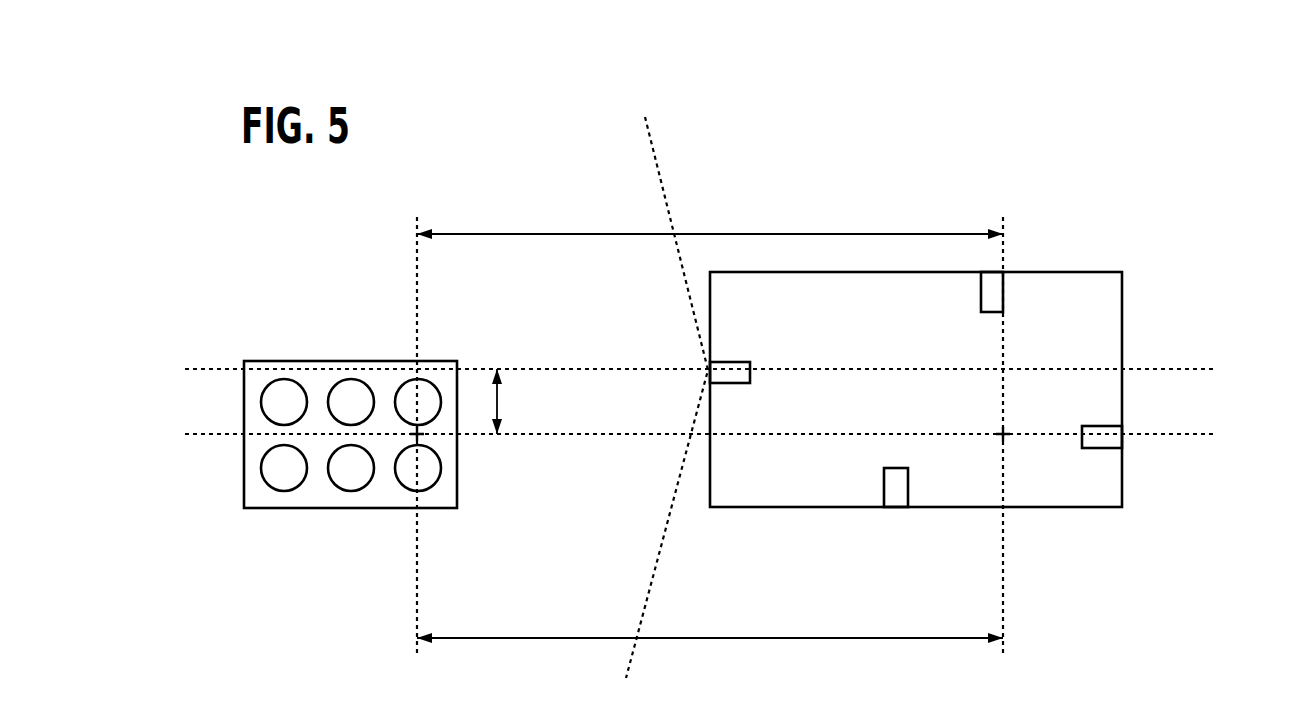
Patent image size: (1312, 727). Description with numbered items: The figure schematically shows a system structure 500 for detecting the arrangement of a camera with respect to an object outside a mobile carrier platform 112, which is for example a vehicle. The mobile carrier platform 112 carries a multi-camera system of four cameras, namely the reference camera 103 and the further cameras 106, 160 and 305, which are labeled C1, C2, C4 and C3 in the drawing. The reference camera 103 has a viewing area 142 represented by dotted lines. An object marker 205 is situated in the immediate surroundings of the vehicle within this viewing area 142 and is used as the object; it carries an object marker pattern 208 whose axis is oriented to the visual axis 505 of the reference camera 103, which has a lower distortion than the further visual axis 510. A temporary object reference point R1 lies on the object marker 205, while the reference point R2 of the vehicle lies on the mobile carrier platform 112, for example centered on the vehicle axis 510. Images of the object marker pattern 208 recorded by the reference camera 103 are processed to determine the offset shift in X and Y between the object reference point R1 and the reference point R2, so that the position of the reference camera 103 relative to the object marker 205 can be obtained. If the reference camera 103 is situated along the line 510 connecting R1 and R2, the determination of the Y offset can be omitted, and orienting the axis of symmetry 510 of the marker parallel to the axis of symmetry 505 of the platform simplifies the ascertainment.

The system structure 500 is at (992, 140).
The mobile carrier platform 112 is at (1118, 304).
The reference camera 103 is at (781, 369).
The camera 106 is at (1012, 270).
The camera 305 is at (1137, 453).
The camera 160 is at (879, 532).
The object marker 205 is at (255, 498).
The object marker pattern 208 is at (351, 491).
The visual axis 505 is at (518, 368).
The further visual axis 510 is at (540, 436).
The viewing area 142 is at (670, 345).
The object reference point R1 is at (418, 436).
The reference point of vehicle R2 is at (1003, 434).
The corner C1 is at (808, 343).
The corner C2 is at (982, 313).
The corner C3 is at (1083, 452).
The corner C4 is at (877, 483).
The X-offset X is at (710, 421).
The Y-offset Y is at (507, 401).